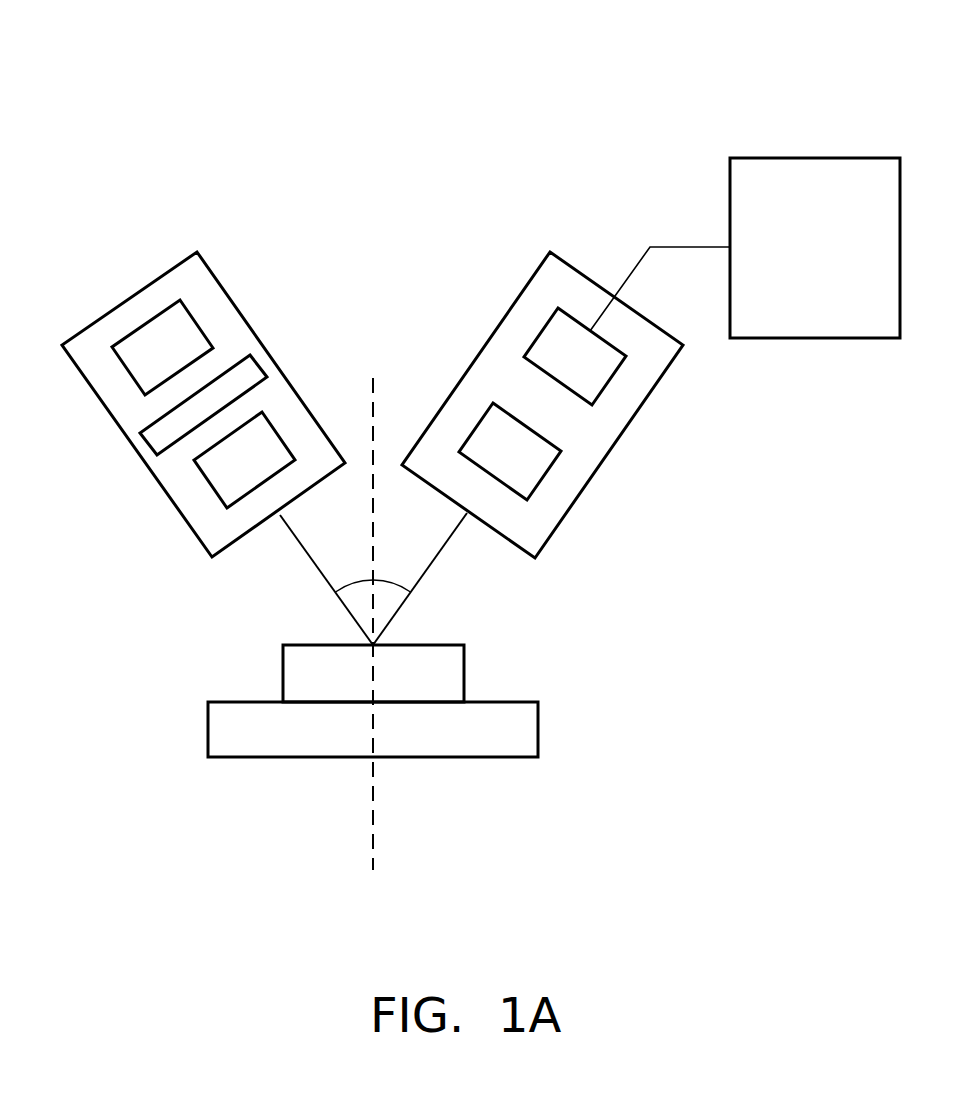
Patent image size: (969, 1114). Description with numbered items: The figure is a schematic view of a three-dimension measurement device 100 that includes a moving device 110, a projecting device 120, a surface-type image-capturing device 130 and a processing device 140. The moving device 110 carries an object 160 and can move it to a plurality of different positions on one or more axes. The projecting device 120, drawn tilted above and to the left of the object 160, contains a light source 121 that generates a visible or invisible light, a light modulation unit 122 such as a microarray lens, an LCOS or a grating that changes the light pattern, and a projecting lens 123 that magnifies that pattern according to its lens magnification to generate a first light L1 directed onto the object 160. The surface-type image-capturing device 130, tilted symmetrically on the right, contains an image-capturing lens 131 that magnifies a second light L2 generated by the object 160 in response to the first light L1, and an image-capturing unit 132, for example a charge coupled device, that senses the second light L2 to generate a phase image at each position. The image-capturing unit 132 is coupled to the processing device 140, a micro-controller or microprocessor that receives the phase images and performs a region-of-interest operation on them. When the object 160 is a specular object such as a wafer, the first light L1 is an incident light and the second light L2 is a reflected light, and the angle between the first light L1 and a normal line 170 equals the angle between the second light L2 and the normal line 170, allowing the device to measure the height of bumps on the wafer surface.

The three-dimension measurement device 100 is at (104, 54).
The moving device 110 is at (538, 731).
The projecting device 120 is at (128, 297).
The light source 121 is at (128, 370).
The light modulation unit 122 is at (145, 443).
The projecting lens 123 is at (207, 487).
The surface-type image-capturing device 130 is at (586, 273).
The image-capturing lens 131 is at (542, 478).
The image-capturing unit 132 is at (613, 383).
The processing device 140 is at (730, 156).
The object 160 is at (465, 673).
The normal line 170 is at (373, 823).
The first light L1 is at (315, 568).
The second light L2 is at (425, 568).